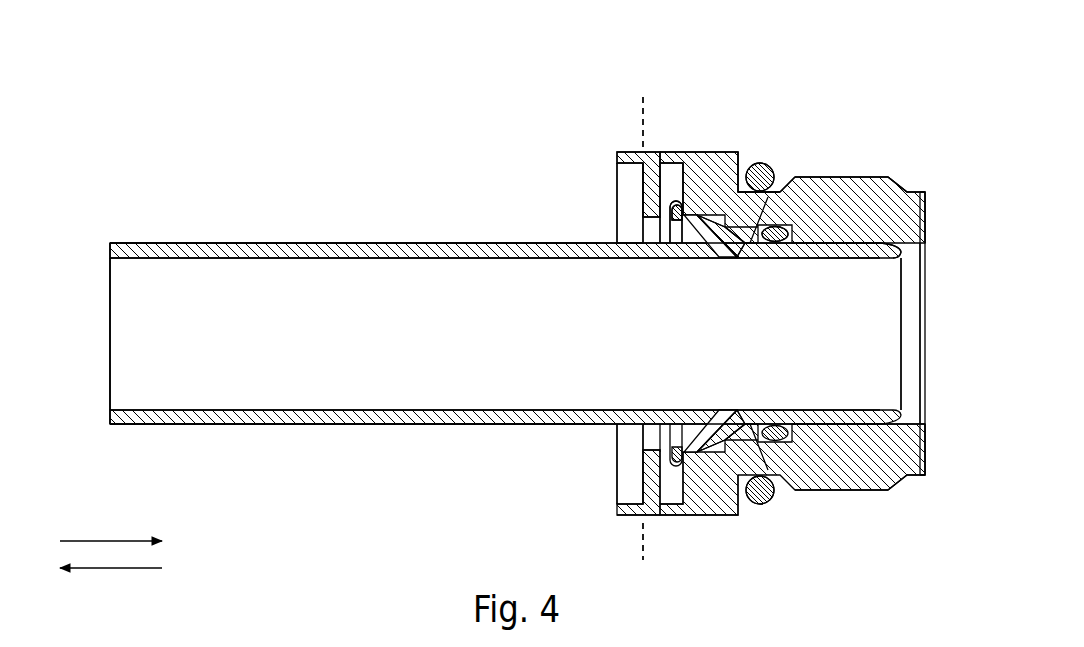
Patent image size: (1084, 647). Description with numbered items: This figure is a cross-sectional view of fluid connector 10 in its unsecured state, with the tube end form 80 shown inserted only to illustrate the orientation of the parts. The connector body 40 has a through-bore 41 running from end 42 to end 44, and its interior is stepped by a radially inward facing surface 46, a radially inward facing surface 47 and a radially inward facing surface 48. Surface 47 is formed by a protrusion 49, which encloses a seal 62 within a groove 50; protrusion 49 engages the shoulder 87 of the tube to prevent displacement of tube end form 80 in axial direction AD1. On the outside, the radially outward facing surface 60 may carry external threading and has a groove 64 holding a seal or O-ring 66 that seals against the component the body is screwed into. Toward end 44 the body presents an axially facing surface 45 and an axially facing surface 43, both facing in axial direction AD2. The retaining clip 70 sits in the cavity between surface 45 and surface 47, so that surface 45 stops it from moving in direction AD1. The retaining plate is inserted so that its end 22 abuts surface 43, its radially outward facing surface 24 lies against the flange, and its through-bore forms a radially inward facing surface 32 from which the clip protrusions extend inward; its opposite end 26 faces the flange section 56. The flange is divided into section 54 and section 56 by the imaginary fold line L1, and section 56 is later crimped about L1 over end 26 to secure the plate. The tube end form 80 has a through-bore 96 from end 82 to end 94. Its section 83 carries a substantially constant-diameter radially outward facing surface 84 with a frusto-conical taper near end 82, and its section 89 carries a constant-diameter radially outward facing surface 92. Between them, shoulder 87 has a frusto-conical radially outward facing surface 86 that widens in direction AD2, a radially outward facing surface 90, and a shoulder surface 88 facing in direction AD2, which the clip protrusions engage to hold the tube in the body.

The fluid connector 10 is at (157, 100).
The end 22 is at (700, 152).
The radially outward facing surface 24 is at (668, 152).
The end 26 is at (642, 478).
The radially inward facing surface 32 is at (640, 436).
The connector body 40 is at (907, 194).
The through-bore 41 is at (907, 378).
The end 42 is at (927, 443).
The surface 43 is at (675, 516).
The end 44 is at (616, 158).
The surface 45 is at (705, 516).
The radially inward facing surface 46 is at (722, 516).
The radially inward facing surface 47 is at (707, 185).
The radially inward facing surface 48 is at (898, 490).
The protrusion 49 is at (756, 170).
The groove 50 is at (790, 190).
The section 54 is at (653, 148).
The section 56 is at (628, 148).
The radially outward facing surface 60 is at (878, 177).
The seal 62 is at (788, 226).
The groove 64 is at (771, 195).
The seal or O-ring 66 is at (766, 502).
The retaining clip 70 is at (678, 213).
The tube end form 80 is at (352, 243).
The end 82 is at (902, 283).
The section 83 is at (837, 434).
The radially outward facing surface 84 is at (842, 243).
The radially outward facing surface 86 is at (733, 258).
The shoulder 87 is at (697, 432).
The shoulder surface 88 is at (687, 258).
The section 89 is at (260, 447).
The radially outward facing surface 90 is at (715, 258).
The radially outward facing surface 92 is at (248, 243).
The end 94 is at (110, 425).
The through-bore 96 is at (148, 348).
The axial direction AD1 is at (92, 540).
The axial direction AD2 is at (110, 568).
The fold line L1 is at (642, 527).